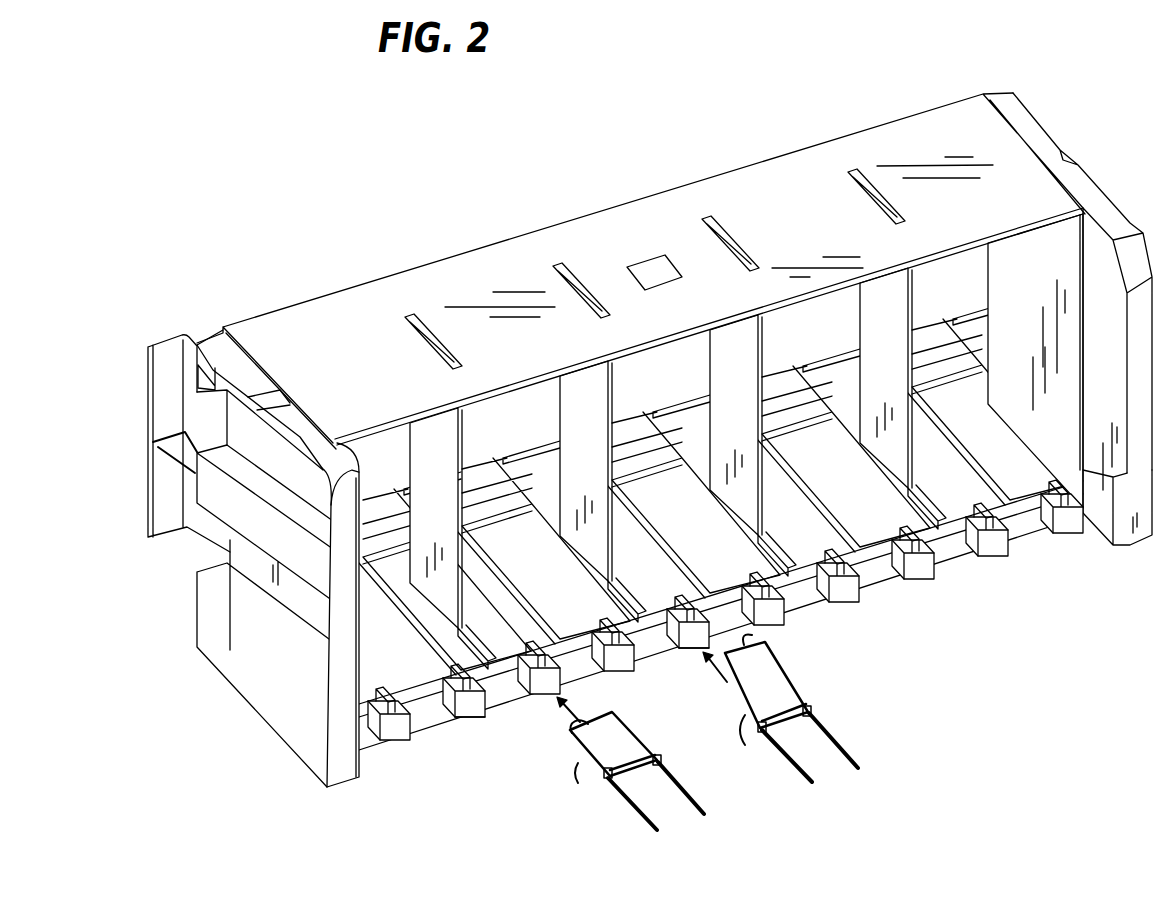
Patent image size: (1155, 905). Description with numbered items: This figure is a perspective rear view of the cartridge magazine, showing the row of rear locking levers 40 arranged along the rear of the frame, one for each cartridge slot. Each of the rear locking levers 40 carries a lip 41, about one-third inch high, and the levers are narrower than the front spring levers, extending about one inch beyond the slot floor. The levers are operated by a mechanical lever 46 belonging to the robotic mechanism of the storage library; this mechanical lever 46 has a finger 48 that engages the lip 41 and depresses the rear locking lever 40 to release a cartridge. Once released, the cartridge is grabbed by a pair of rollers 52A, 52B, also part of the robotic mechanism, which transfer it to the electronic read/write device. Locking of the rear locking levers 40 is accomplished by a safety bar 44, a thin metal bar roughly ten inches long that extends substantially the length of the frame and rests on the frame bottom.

The rear locking levers 40 is at (545, 703).
The lip 41 is at (463, 708).
The safety bar 44 is at (676, 650).
The mechanical lever 46 is at (623, 805).
The finger 48 is at (742, 695).
The roller 52A is at (587, 723).
The roller 52B is at (642, 767).